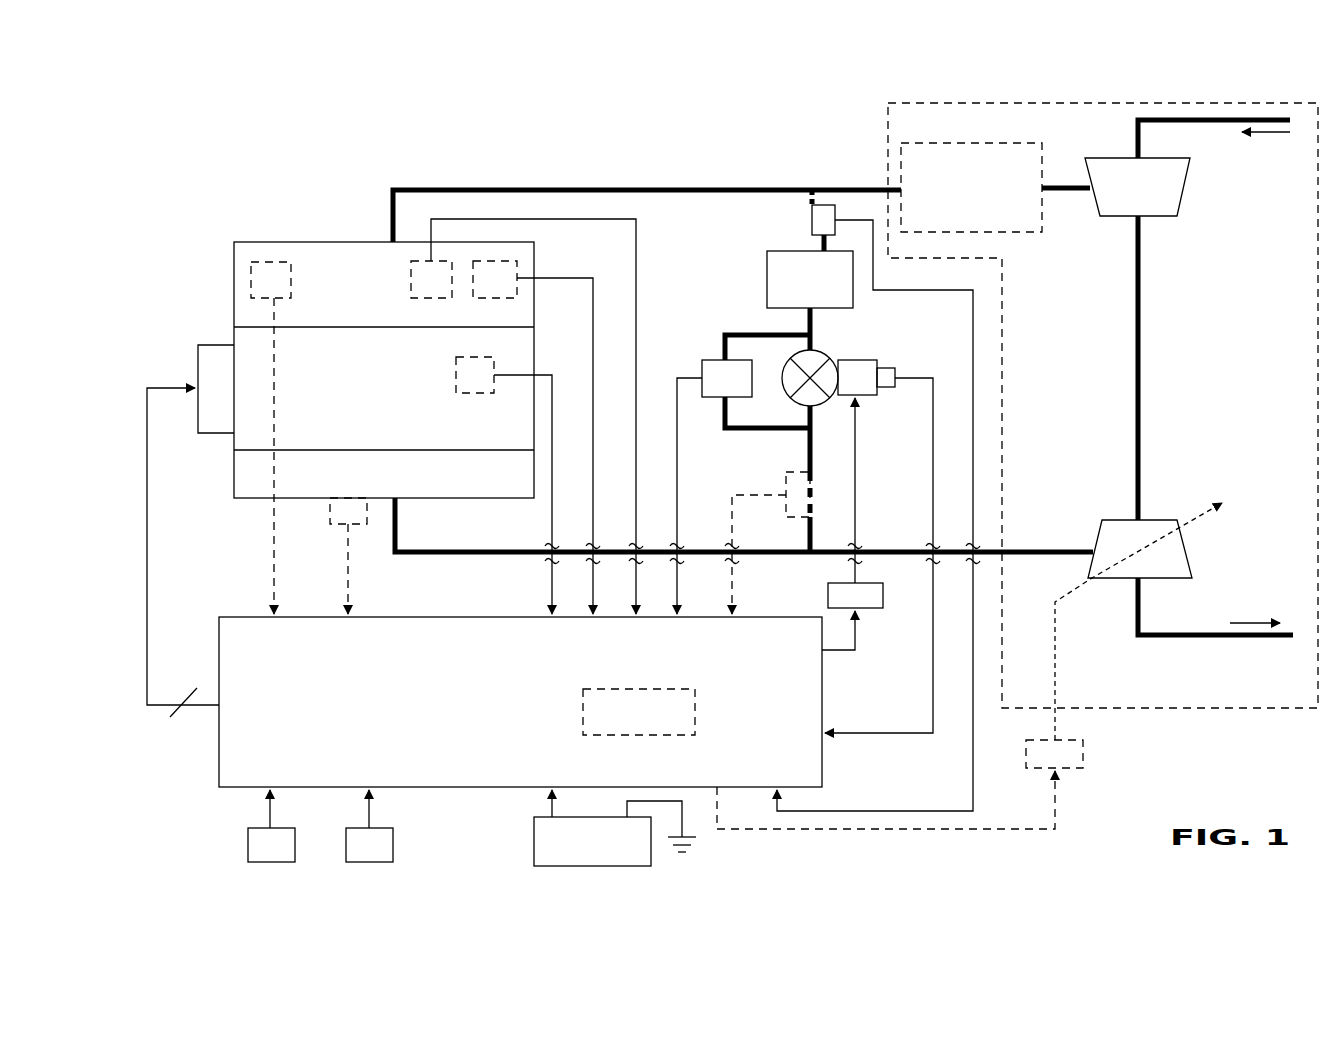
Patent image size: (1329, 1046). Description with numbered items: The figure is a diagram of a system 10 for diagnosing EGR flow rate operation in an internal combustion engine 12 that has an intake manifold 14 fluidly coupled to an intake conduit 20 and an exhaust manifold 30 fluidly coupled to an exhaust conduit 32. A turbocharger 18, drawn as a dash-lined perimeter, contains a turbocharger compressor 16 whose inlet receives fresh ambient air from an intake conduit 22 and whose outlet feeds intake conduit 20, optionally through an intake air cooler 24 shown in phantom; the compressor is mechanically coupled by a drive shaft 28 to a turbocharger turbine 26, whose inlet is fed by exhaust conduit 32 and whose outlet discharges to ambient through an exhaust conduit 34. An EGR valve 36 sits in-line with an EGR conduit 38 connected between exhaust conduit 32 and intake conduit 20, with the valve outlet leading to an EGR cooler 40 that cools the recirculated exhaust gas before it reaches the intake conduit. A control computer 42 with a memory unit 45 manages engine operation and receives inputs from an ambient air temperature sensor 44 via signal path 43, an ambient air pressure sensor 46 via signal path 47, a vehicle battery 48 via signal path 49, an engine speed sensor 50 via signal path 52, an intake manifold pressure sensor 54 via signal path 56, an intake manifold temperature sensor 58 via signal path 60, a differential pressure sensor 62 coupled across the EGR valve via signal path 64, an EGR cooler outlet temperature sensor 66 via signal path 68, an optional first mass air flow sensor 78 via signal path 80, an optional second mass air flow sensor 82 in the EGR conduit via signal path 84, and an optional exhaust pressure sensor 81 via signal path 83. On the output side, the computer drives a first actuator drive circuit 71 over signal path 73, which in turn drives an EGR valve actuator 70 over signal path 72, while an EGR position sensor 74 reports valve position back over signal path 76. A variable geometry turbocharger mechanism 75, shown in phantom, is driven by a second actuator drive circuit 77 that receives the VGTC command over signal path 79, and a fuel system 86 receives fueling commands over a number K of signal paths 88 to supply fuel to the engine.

The system 10 is at (250, 183).
The internal combustion engine 12 is at (234, 332).
The intake manifold 14 is at (342, 242).
The turbocharger compressor 16 is at (1185, 193).
The turbocharger 18 is at (1252, 708).
The intake conduit 20 is at (693, 188).
The intake conduit 22 is at (1135, 140).
The intake air cooler 24 is at (1015, 232).
The turbocharger turbine 26 is at (1185, 557).
The drive shaft 28 is at (1135, 368).
The exhaust manifold 30 is at (258, 498).
The exhaust conduit 32 is at (478, 556).
The exhaust conduit 34 is at (1175, 640).
The EGR valve 36 is at (826, 352).
The EGR conduit 38 is at (808, 440).
The EGR cooler 40 is at (767, 277).
The control computer 42 is at (472, 789).
The signal path 43 is at (268, 818).
The ambient air temperature sensor 44 is at (248, 840).
The memory unit 45 is at (583, 705).
The ambient air pressure sensor 46 is at (393, 840).
The signal path 47 is at (368, 806).
The vehicle battery 48 is at (534, 852).
The signal path 49 is at (550, 796).
The engine speed sensor 50 is at (472, 393).
The signal path 52 is at (548, 503).
The intake manifold pressure sensor 54 is at (513, 265).
The signal path 56 is at (578, 287).
The intake manifold temperature sensor 58 is at (452, 292).
The signal path 60 is at (638, 258).
The differential pressure sensor 62 is at (712, 360).
The signal path 64 is at (676, 376).
The EGR cooler outlet temperature sensor 66 is at (826, 186).
The signal path 68 is at (972, 750).
The EGR valve actuator 70 is at (858, 360).
The first actuator drive circuit 71 is at (860, 608).
The signal path 72 is at (856, 445).
The signal path 73 is at (836, 651).
The EGR position sensor 74 is at (893, 368).
The variable geometry turbocharger mechanism 75 is at (1210, 518).
The signal path 76 is at (932, 478).
The second actuator drive circuit 77 is at (1083, 768).
The first mass air flow sensor 78 is at (251, 280).
The signal path 79 is at (1032, 828).
The signal path 80 is at (275, 578).
The pressure sensor 81 is at (334, 524).
The second mass air flow sensor 82 is at (786, 488).
The signal path 83 is at (350, 578).
The signal path 84 is at (730, 512).
The fuel system 86 is at (216, 433).
The signal paths 88 is at (148, 548).